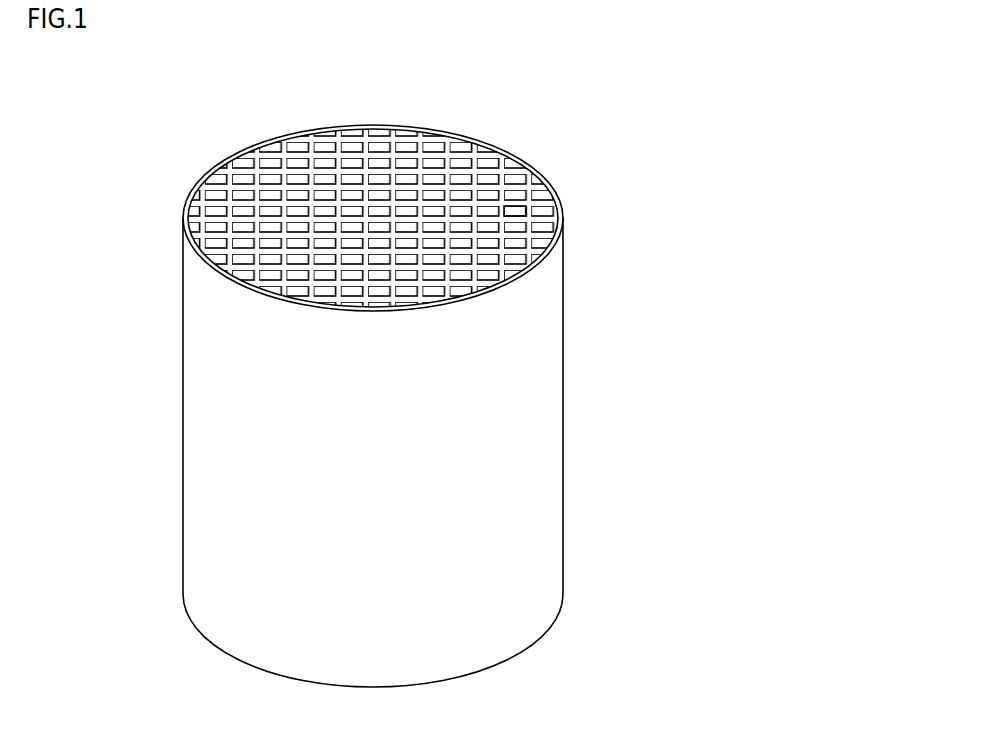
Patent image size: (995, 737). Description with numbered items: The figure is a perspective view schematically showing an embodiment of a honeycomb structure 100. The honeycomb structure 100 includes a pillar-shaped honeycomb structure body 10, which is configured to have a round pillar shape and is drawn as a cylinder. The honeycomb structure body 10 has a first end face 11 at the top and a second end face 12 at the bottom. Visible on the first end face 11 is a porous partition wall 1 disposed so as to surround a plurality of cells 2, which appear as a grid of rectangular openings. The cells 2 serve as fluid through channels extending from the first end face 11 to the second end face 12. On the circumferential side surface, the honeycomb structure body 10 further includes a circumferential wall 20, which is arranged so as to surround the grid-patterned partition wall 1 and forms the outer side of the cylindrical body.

The honeycomb structure 100 is at (697, 76).
The honeycomb structure body 10 is at (567, 262).
The circumferential wall 20 is at (532, 348).
The first end face 11 is at (257, 144).
The second end face 12 is at (207, 650).
The partition wall 1 is at (475, 188).
The cells 2 is at (517, 210).